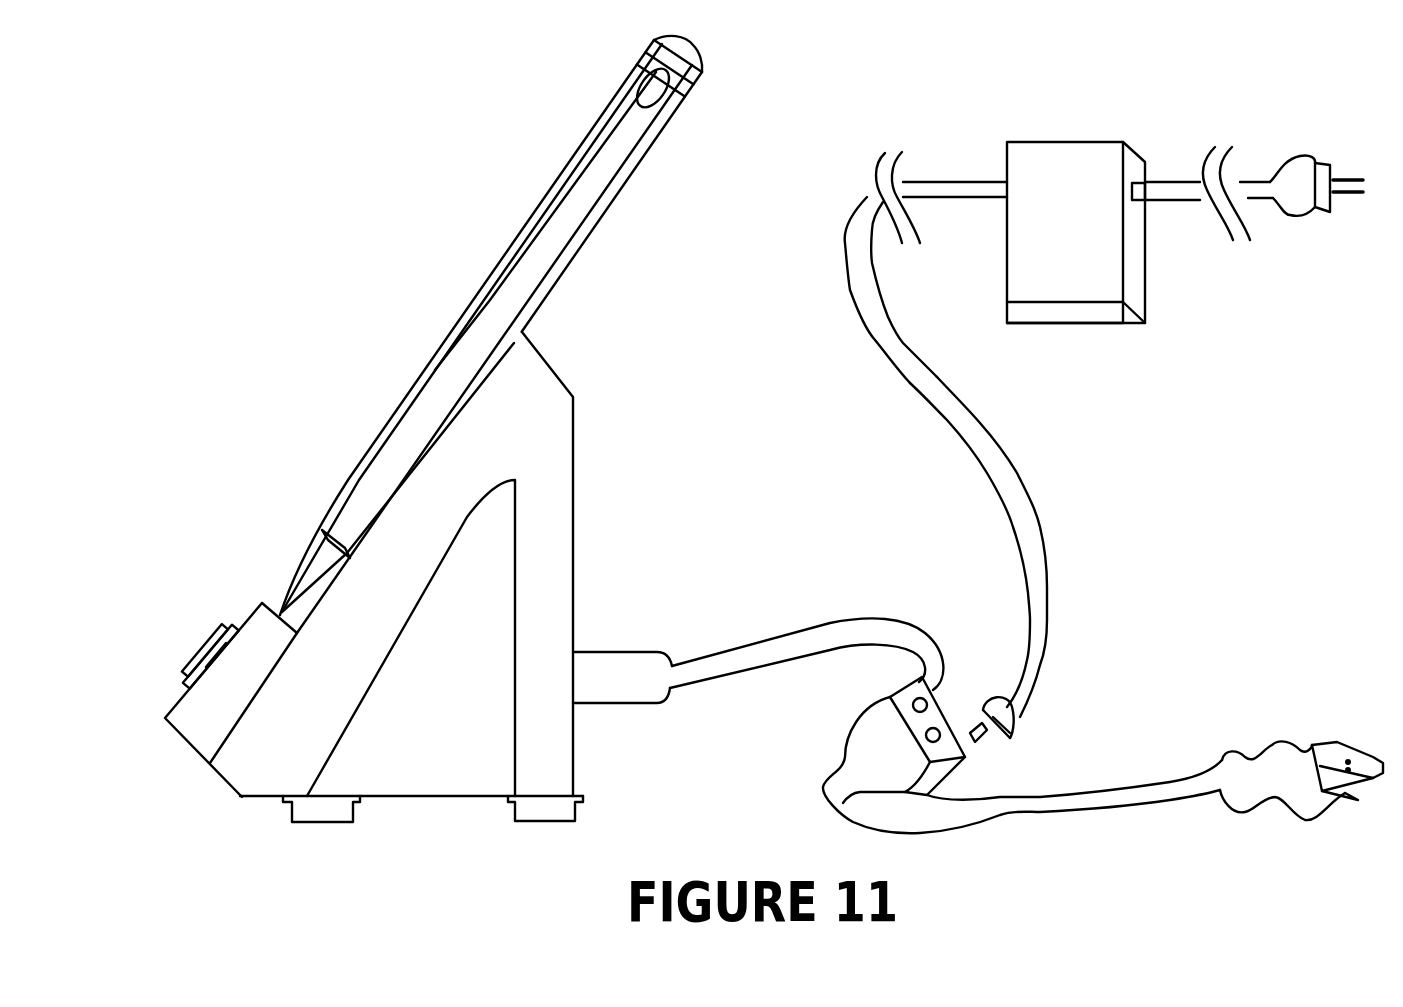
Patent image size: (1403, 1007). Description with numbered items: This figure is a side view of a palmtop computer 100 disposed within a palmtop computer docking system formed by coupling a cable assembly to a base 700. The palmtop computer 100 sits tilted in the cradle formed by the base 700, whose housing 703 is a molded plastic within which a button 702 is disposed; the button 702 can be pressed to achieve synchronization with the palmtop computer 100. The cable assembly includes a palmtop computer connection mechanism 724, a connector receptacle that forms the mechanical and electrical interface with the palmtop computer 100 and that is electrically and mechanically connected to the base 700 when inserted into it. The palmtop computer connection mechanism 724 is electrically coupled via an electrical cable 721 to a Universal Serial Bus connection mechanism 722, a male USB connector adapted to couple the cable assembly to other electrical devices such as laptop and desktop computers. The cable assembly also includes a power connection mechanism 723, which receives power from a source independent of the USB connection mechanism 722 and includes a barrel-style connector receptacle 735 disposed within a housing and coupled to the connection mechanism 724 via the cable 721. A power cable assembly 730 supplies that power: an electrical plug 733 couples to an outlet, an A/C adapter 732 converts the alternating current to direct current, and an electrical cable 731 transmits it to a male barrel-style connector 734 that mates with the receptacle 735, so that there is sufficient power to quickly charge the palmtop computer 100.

The palmtop computer system 100 is at (588, 242).
The base 700 is at (388, 577).
The button 702 is at (192, 652).
The housing 703 is at (470, 726).
The electrical cable 721 is at (733, 643).
The Universal Serial Bus (USB) connection mechanism 722 is at (1297, 787).
The power connection mechanism 723 is at (929, 731).
The palmtop computer connection mechanism 724 is at (642, 691).
The power cable assembly 730 is at (1025, 497).
The electrical cable 731 is at (948, 407).
The A/C adapter 732 is at (1145, 297).
The electrical plug 733 is at (1298, 208).
The male barrel-style connector 734 is at (1012, 727).
The barrel-style connector receptacle 735 is at (938, 723).